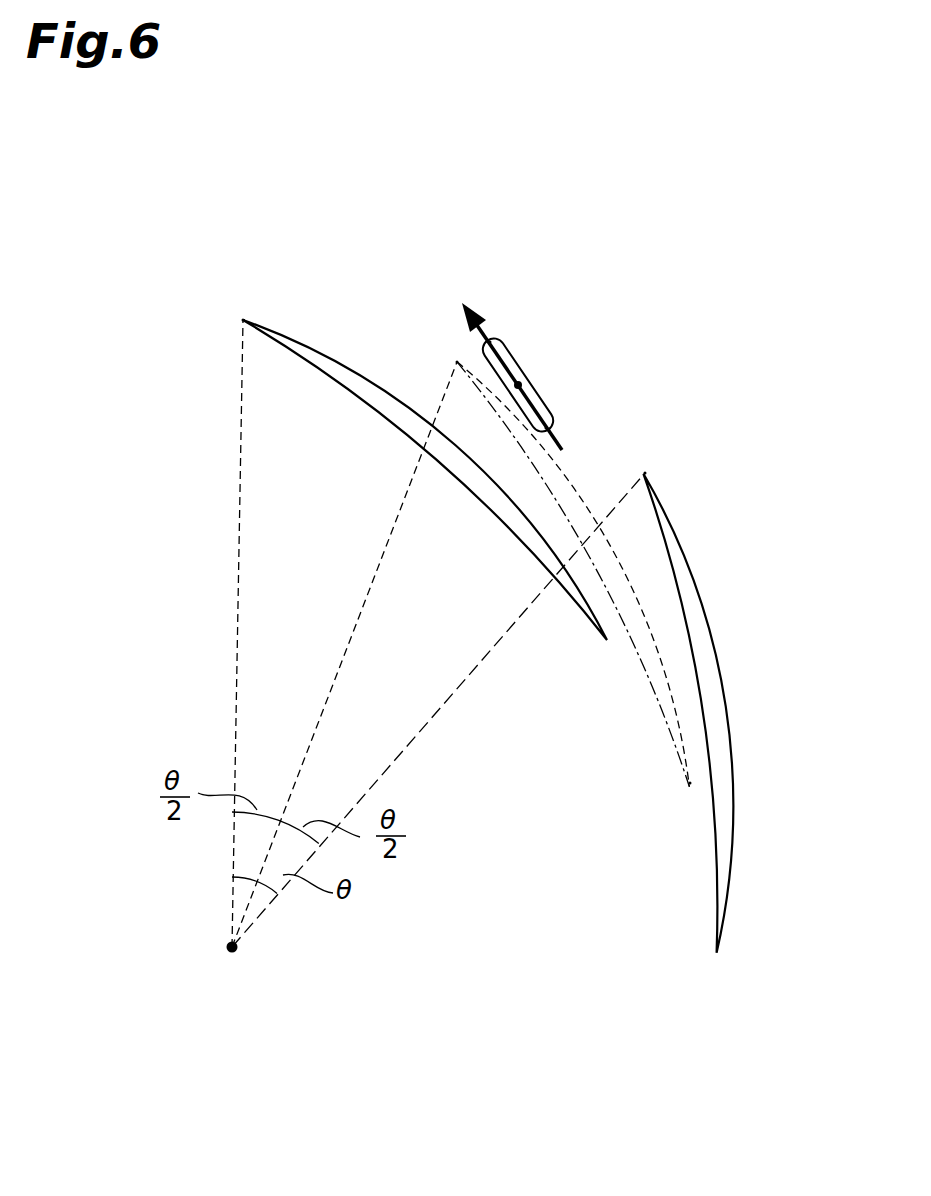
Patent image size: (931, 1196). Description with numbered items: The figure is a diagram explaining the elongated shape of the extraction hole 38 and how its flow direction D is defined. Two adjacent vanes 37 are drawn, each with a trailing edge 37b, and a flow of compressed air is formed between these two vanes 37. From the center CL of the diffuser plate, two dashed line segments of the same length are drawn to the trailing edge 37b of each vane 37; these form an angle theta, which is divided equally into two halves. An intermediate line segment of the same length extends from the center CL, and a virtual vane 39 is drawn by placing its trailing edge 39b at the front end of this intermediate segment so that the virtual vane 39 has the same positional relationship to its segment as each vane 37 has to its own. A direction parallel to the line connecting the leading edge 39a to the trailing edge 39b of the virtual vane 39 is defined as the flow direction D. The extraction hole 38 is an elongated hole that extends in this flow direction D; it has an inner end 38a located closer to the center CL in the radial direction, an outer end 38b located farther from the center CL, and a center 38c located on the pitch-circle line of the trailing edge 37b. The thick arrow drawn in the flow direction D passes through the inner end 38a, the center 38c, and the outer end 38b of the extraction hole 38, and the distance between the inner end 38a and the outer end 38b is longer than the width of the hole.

The vane 37 is at (399, 396).
The trailing edge 37b is at (243, 320).
The extraction hole 38 is at (544, 375).
The inner end 38a is at (542, 430).
The outer end 38b is at (490, 340).
The center 38c is at (518, 383).
The virtual vane 39 is at (638, 675).
The leading edge 39a is at (690, 784).
The trailing edge 39b is at (457, 362).
The flow direction D is at (541, 403).
The center CL is at (232, 956).